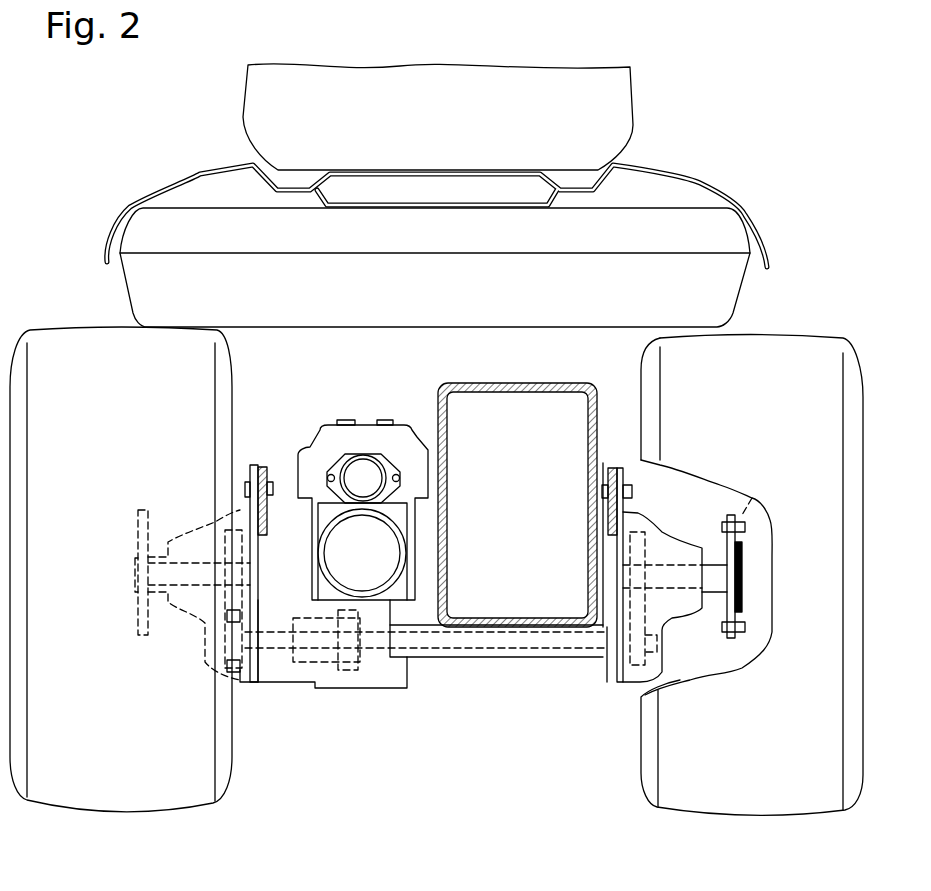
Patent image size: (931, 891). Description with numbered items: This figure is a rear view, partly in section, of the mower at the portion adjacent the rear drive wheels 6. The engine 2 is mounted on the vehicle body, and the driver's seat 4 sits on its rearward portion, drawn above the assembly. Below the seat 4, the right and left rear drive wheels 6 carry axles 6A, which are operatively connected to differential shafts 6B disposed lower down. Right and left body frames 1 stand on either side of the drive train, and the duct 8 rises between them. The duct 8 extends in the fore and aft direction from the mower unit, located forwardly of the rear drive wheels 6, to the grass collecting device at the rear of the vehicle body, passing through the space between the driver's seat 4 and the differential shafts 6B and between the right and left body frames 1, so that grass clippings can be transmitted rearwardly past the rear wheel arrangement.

The body frames 1 is at (270, 472).
The engine 2 is at (310, 447).
The driver's seat 4 is at (617, 115).
The rear drive wheels 6 is at (227, 754).
The axles 6A is at (193, 560).
The differential shafts 6B is at (480, 643).
The duct 8 is at (493, 382).